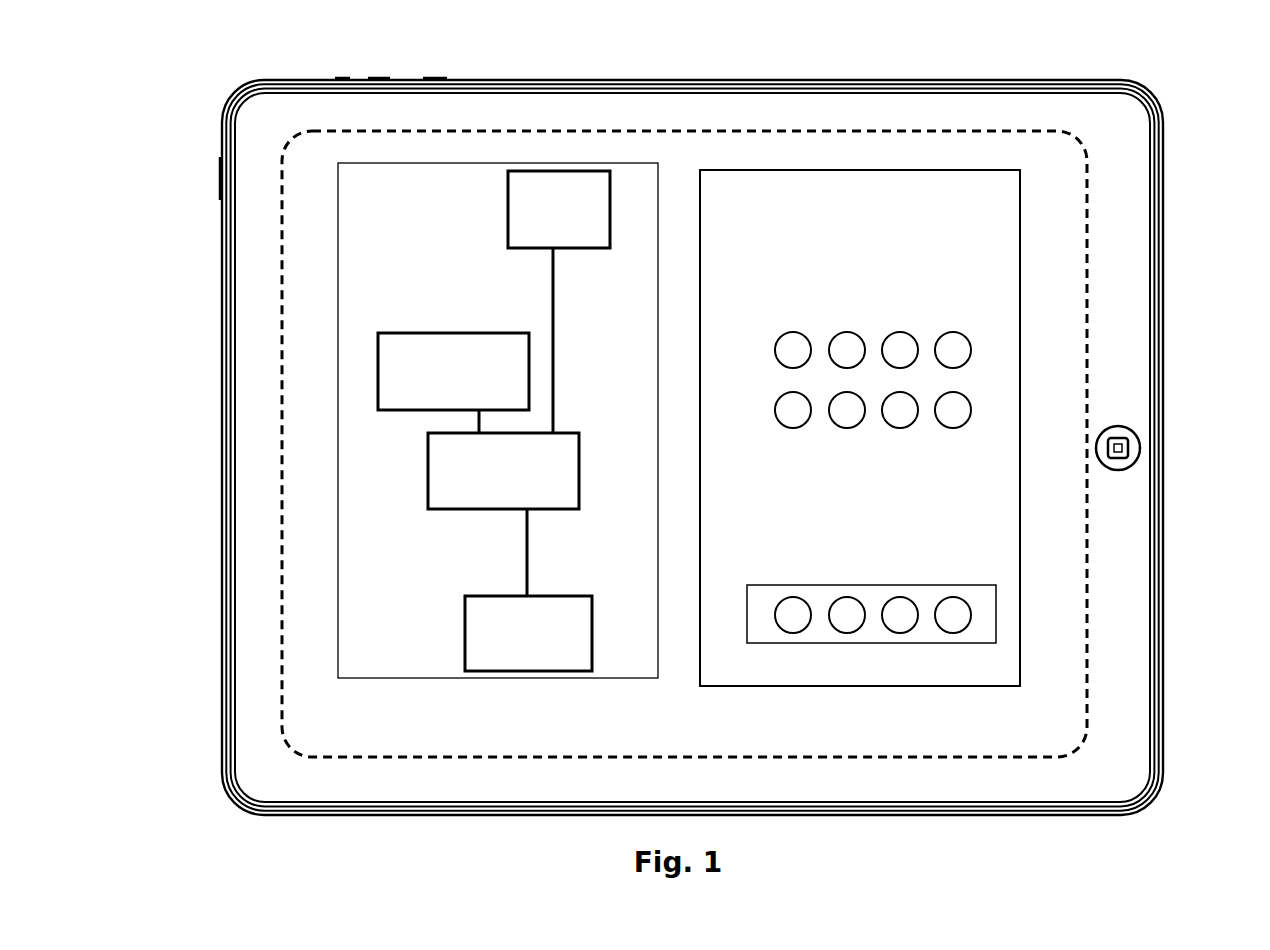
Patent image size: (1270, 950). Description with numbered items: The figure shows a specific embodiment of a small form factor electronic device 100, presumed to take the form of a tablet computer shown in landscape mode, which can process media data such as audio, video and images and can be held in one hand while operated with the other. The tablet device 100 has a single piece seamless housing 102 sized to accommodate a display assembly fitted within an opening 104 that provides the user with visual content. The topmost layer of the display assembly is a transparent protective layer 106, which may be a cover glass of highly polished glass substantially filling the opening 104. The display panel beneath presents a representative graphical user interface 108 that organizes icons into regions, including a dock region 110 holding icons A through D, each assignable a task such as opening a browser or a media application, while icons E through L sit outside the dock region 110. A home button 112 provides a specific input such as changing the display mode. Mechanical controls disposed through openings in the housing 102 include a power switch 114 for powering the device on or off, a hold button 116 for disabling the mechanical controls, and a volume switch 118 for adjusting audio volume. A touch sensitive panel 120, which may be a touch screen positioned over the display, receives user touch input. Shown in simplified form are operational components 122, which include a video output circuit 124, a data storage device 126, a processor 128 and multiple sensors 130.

The electronic device 100 is at (1190, 667).
The single piece seamless housing 102 is at (1162, 241).
The opening 104 is at (1074, 96).
The transparent protective layer 106 is at (1123, 156).
The graphical user interface 108 is at (860, 428).
The dock region 110 is at (869, 582).
The home button 112 is at (1118, 430).
The power switch 114 is at (217, 180).
The hold button 116 is at (333, 73).
The volume switch 118 is at (427, 73).
The touch sensitive panel 120 is at (1090, 553).
The operational components 122 is at (498, 420).
The video output circuit 124 is at (559, 302).
The data storage device 126 is at (453, 383).
The processor 128 is at (503, 514).
The multiple sensors 130 is at (528, 633).